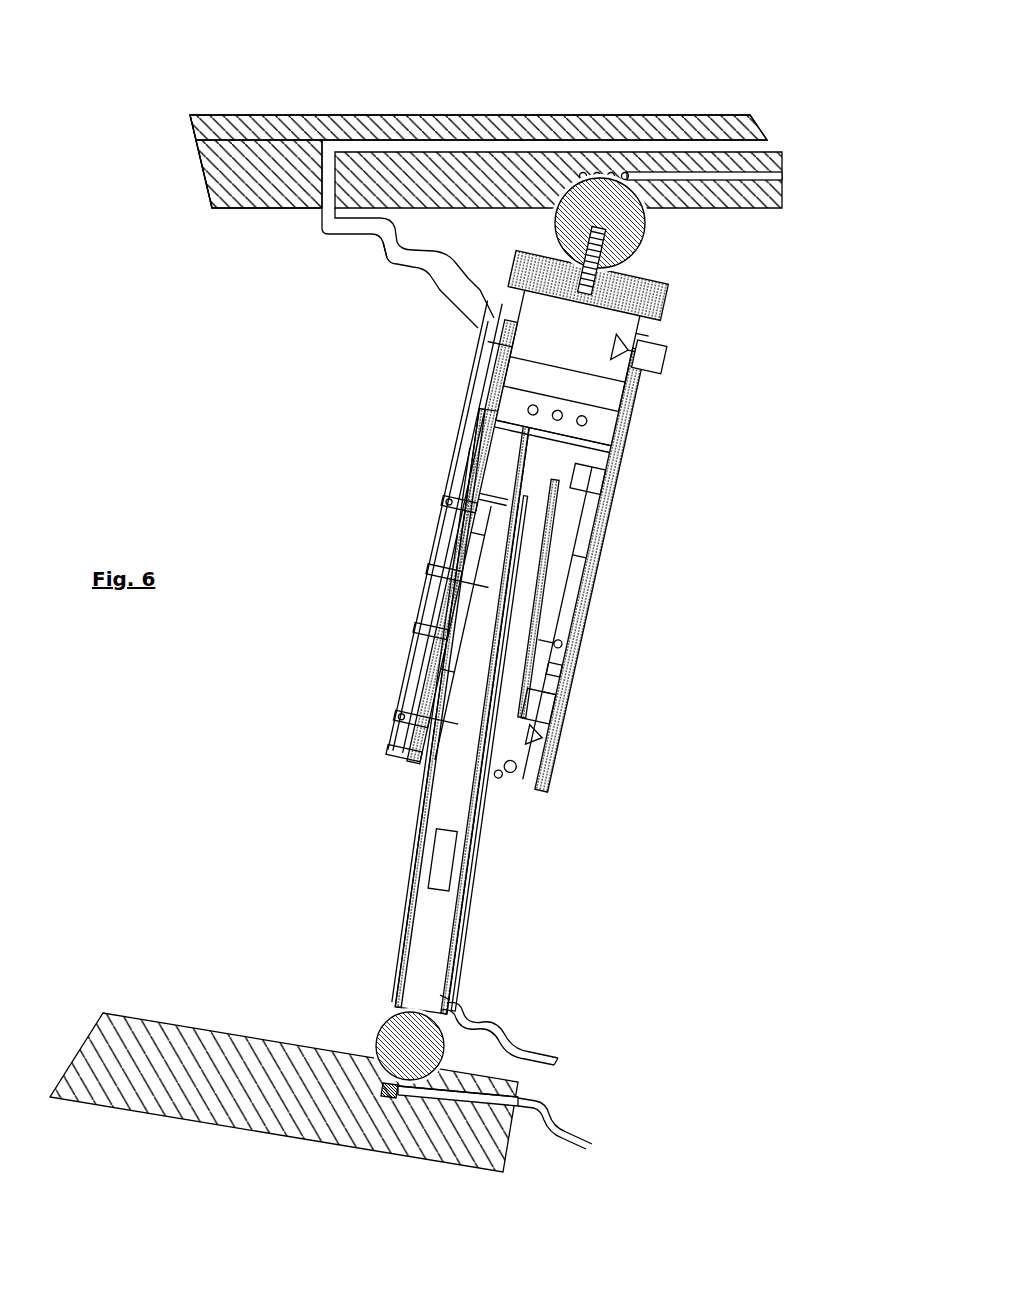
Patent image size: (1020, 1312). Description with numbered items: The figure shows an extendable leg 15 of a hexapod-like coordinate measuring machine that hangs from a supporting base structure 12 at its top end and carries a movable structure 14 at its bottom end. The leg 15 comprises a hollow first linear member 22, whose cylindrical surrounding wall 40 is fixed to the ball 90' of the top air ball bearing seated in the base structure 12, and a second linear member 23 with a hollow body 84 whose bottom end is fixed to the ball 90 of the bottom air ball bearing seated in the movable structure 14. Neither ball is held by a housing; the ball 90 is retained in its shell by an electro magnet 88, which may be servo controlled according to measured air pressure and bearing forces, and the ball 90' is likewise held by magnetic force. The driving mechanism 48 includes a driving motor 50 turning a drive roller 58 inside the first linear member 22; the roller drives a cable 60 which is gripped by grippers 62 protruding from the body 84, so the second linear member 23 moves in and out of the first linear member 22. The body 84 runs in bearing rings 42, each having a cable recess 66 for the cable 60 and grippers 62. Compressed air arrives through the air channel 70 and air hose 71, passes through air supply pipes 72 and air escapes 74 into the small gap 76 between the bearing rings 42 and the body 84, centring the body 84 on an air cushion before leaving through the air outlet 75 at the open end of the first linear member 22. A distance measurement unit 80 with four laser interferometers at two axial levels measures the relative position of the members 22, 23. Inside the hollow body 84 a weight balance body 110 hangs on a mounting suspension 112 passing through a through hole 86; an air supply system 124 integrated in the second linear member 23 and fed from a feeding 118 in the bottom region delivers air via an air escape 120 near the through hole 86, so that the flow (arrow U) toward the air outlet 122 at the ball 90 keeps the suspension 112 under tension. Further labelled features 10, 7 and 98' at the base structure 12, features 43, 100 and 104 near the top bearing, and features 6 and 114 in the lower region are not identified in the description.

The vehicle body structure 10 is at (535, 160).
The electro magnet 88 is at (622, 175).
The body panel 7 is at (660, 150).
The flat conductor 98' is at (670, 589).
The supporting base structure 12 is at (235, 145).
The air channel 70 is at (333, 180).
The air hose 71 is at (398, 252).
The air escapes 74 is at (528, 352).
The air supply pipes 72 is at (525, 383).
The piston 43 is at (545, 412).
The cable recess 66 is at (540, 425).
The through hole 86 is at (533, 490).
The bearing rings 42 is at (600, 420).
The small gap 76 is at (460, 590).
The distance measurement unit 80 is at (430, 650).
The air outlet 75 is at (475, 715).
The extendable leg 15 is at (355, 790).
The mounting suspension 112 is at (440, 830).
The weight balance body 110 is at (455, 855).
The hollow body 84 is at (450, 910).
The movable structure 14 is at (250, 1060).
The air outlet 122 is at (395, 1020).
The ball 90 is at (453, 1141).
The screw 104 is at (615, 255).
The ball 90' is at (690, 224).
The housing head 100 is at (643, 293).
The drive roller 58 is at (648, 345).
The driving mechanism 48 is at (680, 362).
The driving motor 50 is at (650, 363).
The drive cable 60 is at (590, 480).
The air escape 120 is at (600, 525).
The first linear member 22 is at (604, 551).
The gripper 62 is at (605, 575).
The air flow direction (arrow U) U is at (570, 615).
The surrounding wall 40 is at (568, 715).
The gear 6 is at (540, 750).
The second linear member 23 is at (494, 838).
The air supply system 124 is at (550, 1048).
The cable outlet 114 is at (415, 1043).
The feeding 118 is at (540, 1053).